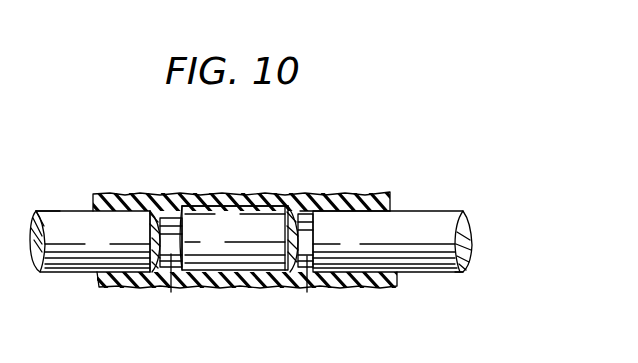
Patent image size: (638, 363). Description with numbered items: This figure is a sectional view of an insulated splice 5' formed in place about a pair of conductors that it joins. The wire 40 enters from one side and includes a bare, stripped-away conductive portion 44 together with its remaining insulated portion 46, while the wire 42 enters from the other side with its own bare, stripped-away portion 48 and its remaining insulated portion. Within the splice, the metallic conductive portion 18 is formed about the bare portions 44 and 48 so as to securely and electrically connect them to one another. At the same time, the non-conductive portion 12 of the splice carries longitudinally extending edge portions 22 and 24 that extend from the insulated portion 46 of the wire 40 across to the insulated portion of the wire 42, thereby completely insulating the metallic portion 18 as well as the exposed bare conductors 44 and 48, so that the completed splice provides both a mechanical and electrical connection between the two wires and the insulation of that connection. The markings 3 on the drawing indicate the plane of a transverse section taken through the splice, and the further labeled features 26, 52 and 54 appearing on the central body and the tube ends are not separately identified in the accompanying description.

The section line 3- 3 is at (197, 153).
The splice 5' is at (284, 144).
The non-conductive portion 12 is at (188, 206).
The metallic conductive portion 18 is at (217, 262).
The longitudinally extending edge portion 22 is at (112, 203).
The longitudinally extending edge portion 24 is at (357, 197).
The central cylindrical member 26 is at (285, 216).
The wire 40 is at (42, 286).
The wire 42 is at (446, 282).
The bare conductive portion 44 is at (167, 277).
The insulated portion 46 is at (58, 213).
The bare portion 48 is at (300, 276).
The tube 52 is at (78, 210).
The tube end 54 is at (433, 228).